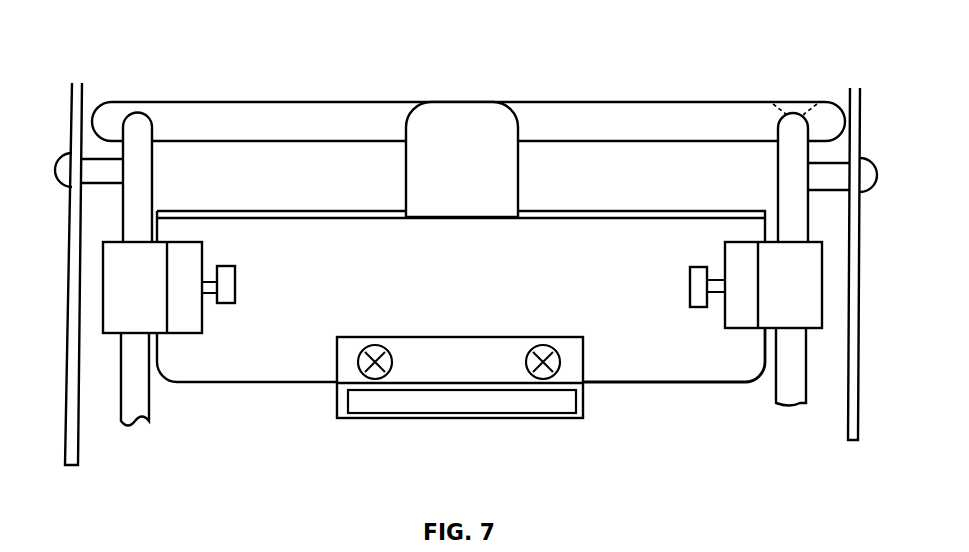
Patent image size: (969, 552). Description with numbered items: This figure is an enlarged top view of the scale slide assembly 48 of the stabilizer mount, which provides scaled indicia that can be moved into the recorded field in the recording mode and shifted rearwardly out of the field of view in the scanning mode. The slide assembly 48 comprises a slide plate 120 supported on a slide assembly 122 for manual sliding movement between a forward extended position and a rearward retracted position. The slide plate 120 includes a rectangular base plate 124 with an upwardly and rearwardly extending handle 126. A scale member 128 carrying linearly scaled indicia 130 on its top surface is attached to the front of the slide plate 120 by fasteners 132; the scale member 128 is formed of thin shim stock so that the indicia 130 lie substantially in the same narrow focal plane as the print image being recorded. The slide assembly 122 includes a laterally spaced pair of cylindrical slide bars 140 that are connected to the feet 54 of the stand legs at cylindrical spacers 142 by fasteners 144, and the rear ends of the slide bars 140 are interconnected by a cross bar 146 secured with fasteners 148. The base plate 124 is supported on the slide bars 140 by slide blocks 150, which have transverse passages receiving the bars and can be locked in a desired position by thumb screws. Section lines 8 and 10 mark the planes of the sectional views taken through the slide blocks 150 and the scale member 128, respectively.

The section line 8- 8 is at (255, 296).
The section line 10- 10 is at (432, 373).
The scale slide assembly 48 is at (624, 386).
The transverse foot 54 is at (850, 435).
The slide plate 120 is at (461, 348).
The slide assembly 122 is at (468, 114).
The rectangular base plate 124 is at (222, 365).
The handle 126 is at (465, 113).
The scale member 128 is at (501, 365).
The linearly scaled indicia 130 is at (470, 400).
The fasteners 132 is at (547, 348).
The cylindrical slide bars 140 is at (790, 387).
The cylindrical spacers 142 is at (98, 163).
The fasteners 144 is at (63, 173).
The cross bar 146 is at (613, 113).
The fasteners 148 is at (792, 110).
The slide blocks 150 is at (172, 313).